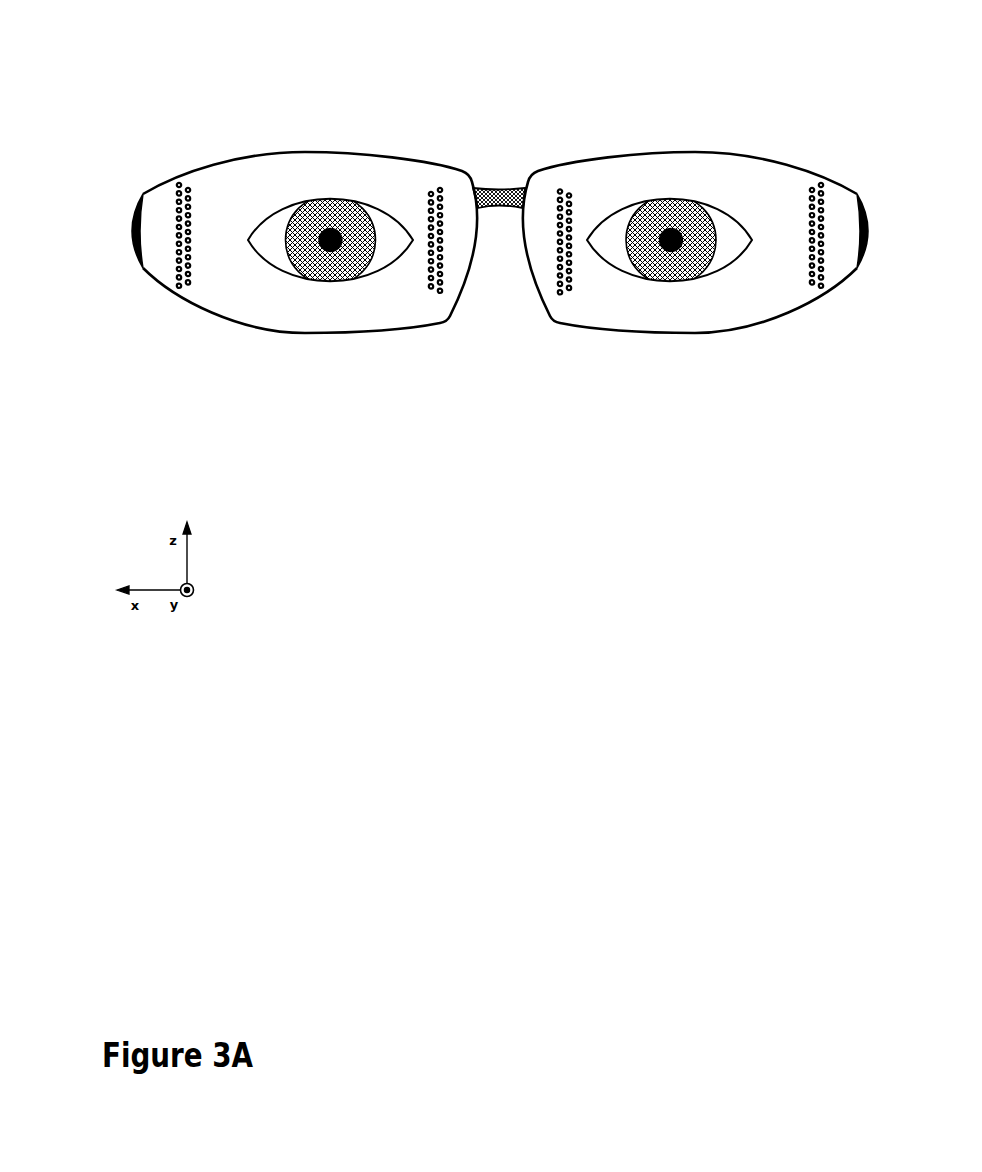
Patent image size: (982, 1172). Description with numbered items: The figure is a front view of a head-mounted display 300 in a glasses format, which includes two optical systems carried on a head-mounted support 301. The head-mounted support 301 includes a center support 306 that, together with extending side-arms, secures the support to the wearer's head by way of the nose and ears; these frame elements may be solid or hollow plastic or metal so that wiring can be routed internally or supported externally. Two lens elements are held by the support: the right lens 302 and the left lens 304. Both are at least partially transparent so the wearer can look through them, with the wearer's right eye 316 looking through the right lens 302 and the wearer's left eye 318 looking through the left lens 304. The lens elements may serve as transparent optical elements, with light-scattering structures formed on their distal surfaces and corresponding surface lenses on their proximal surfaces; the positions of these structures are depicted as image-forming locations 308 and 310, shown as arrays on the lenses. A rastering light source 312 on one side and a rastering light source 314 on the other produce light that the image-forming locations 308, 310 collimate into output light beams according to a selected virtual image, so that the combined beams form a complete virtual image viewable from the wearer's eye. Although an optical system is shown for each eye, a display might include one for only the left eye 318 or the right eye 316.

The head-mounted display 300 is at (500, 331).
The head-mounted support 301 is at (452, 106).
The right lens 302 is at (313, 332).
The left lens 304 is at (667, 332).
The center support 306 is at (494, 189).
The image-forming locations 308 is at (175, 182).
The image-forming locations 310 is at (820, 186).
The rastering light source 312 is at (142, 265).
The rastering light source 314 is at (857, 272).
The right eye 316 is at (331, 199).
The left eye 318 is at (675, 199).